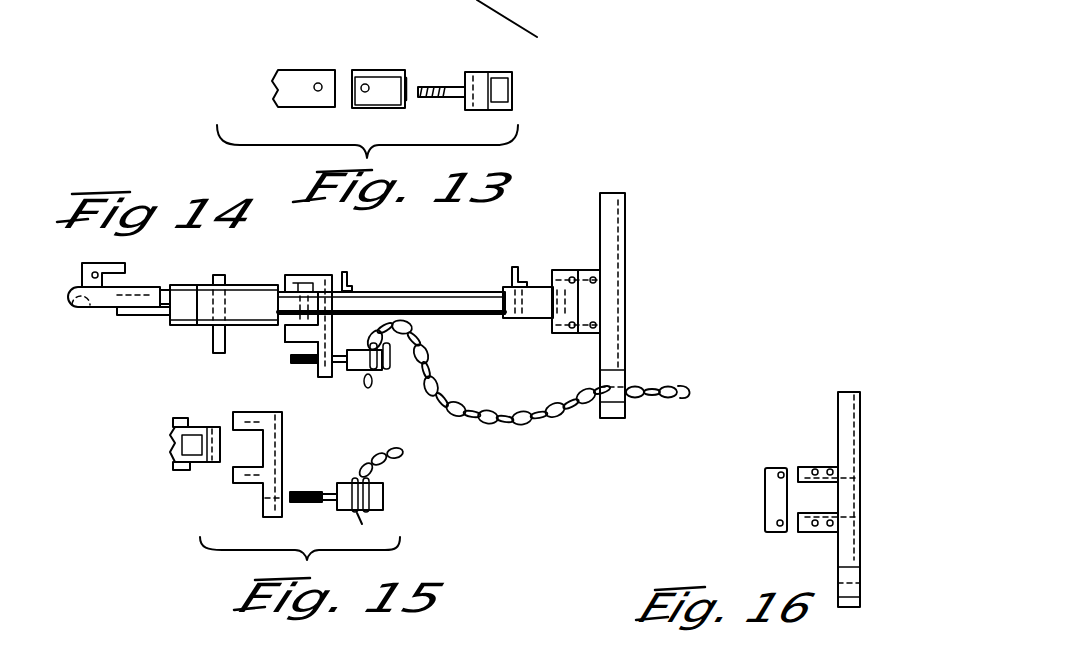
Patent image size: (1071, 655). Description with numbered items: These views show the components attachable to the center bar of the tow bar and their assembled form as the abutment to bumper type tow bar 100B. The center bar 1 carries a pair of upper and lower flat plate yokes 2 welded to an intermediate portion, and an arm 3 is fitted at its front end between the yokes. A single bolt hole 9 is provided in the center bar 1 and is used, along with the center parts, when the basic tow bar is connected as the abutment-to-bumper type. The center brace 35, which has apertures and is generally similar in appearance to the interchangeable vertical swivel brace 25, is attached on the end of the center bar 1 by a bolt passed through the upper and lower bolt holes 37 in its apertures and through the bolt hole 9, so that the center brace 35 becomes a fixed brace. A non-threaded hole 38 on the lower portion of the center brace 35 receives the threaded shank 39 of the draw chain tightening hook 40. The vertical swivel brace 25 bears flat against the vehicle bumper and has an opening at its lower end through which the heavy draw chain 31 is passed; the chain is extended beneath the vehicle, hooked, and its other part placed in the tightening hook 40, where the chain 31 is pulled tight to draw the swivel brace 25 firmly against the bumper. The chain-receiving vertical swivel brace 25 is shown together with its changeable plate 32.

In FIG. 13, the center bar 1 is at (272, 74).
In FIG. 14, the center bar 1 is at (110, 350).
In FIG. 14, the flat plate yokes 2 is at (158, 350).
In FIG. 14, the arm 3 is at (439, 275).
In FIG. 13, the bolt hole 9 is at (318, 83).
In FIG. 14, the interchangeable vertical swivel brace 25 is at (627, 225).
In FIG. 16, the interchangeable vertical swivel brace 25 is at (862, 413).
In FIG. 14, the draw chain 31 is at (437, 382).
In FIG. 16, the mounting plate 32 is at (718, 465).
In FIG. 13, the center brace 35 is at (382, 70).
In FIG. 14, the center brace 35 is at (312, 275).
In FIG. 15, the center brace 35 is at (282, 440).
In FIG. 13, the bolt holes 37 is at (407, 84).
In FIG. 15, the bolt holes 37 is at (180, 388).
In FIG. 14, the non-threaded hole 38 is at (308, 372).
In FIG. 13, the threaded shank 39 is at (452, 99).
In FIG. 14, the threaded shank 39 is at (280, 377).
In FIG. 13, the draw chain tightening hook 40 is at (476, 72).
In FIG. 14, the draw chain tightening hook 40 is at (385, 373).
In FIG. 15, the draw chain tightening hook 40 is at (373, 510).
In FIG. 14, the hitch assembly 100B is at (752, 205).